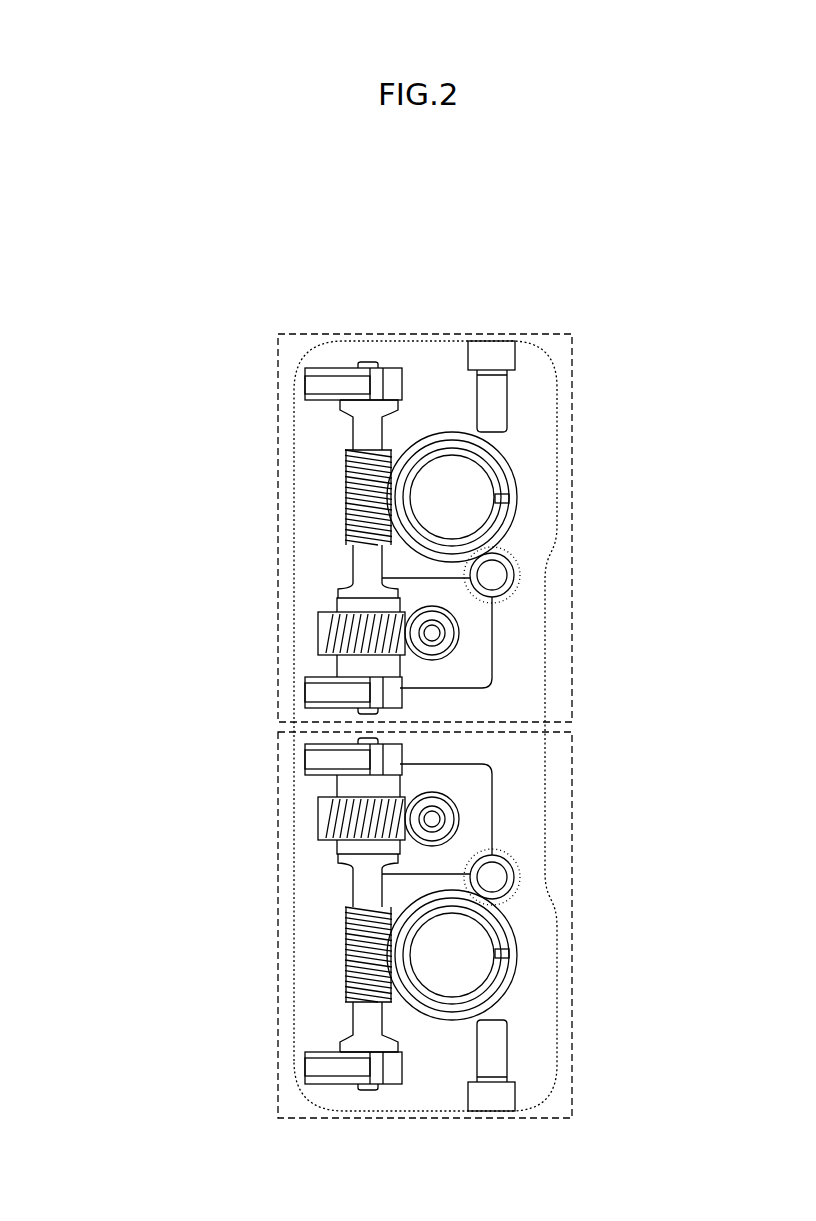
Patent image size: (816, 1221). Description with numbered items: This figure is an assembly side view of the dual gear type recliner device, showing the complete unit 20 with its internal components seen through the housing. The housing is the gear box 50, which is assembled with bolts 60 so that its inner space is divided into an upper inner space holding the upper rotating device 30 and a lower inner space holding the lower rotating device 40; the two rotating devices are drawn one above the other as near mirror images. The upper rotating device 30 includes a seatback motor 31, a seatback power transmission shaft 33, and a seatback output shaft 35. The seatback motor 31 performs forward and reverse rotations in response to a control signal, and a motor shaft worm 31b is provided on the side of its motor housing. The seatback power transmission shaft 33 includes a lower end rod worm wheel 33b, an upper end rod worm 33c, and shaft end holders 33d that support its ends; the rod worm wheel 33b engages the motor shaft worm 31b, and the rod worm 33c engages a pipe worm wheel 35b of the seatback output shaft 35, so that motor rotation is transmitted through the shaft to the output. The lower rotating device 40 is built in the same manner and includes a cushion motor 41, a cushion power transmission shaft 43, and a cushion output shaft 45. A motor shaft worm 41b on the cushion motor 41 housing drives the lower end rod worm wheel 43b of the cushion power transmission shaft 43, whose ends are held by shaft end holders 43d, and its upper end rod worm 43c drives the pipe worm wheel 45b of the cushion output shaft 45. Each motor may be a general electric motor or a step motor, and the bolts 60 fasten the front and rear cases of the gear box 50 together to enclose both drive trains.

The actuator assembly 20 is at (338, 296).
The upper rotating device 30 is at (572, 360).
The lower rotating device 40 is at (572, 1100).
The gear box 50 is at (420, 347).
The bolts 60 is at (496, 347).
The seatback power transmission shaft 33 is at (150, 415).
The lower end rod worm wheel 33b is at (320, 630).
The upper end rod worm 33c is at (347, 478).
The shaft end holder 33d is at (332, 387).
The seatback motor 31 is at (492, 660).
The right motor shaft worm 31b is at (458, 620).
The seatback output shaft 35 is at (403, 495).
The right pipe worm wheel 35b is at (480, 487).
The cushion power transmission shaft 43 is at (150, 785).
The lower end rod worm wheel 43b is at (320, 822).
The upper end rod worm 43c is at (347, 972).
The shaft end holder 43d is at (317, 758).
The cushion motor 41 is at (492, 793).
The right motor shaft worm 41b is at (456, 823).
The cushion output shaft 45 is at (403, 957).
The right pipe worm wheel 45b is at (483, 957).